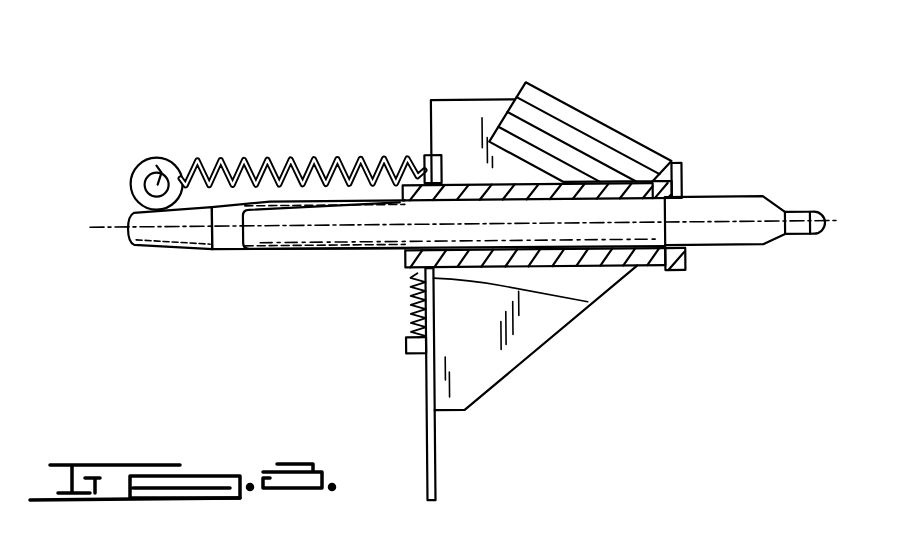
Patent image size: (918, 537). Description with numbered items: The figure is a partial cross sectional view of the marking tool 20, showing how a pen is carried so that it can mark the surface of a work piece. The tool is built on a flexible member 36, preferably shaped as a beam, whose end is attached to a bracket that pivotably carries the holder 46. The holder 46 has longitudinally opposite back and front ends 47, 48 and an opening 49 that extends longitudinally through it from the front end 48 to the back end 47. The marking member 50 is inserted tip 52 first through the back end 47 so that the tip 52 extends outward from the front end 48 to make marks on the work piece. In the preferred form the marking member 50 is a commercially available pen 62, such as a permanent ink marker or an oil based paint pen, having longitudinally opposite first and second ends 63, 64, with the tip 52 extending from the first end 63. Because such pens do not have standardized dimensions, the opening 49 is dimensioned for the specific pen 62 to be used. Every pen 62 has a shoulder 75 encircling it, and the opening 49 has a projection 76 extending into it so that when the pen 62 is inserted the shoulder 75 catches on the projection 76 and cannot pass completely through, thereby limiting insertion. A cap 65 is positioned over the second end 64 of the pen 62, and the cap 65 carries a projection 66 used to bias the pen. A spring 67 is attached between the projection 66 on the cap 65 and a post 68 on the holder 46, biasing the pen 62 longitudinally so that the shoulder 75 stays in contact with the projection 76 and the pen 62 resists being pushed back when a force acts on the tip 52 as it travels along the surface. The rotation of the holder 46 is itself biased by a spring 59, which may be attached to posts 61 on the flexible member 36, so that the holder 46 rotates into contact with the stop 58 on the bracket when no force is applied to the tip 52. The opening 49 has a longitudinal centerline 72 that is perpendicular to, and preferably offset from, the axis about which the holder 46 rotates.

The marking tool 20 is at (270, 100).
The flexible member 36 is at (437, 440).
The holder 46 is at (658, 268).
The back end 47 is at (402, 262).
The front end 48 is at (683, 268).
The opening 49 is at (583, 250).
The marking member 50 is at (706, 198).
The tip 52 is at (820, 238).
The stop 58 is at (590, 130).
The spring 59 is at (408, 320).
The posts 61 is at (405, 348).
The pen 62 is at (466, 225).
The first end 63 is at (792, 214).
The second end 64 is at (228, 252).
The cap 65 is at (130, 218).
The projection 66 is at (140, 158).
The spring 67 is at (223, 156).
The post 68 is at (428, 158).
The longitudinal centerline 72 is at (112, 232).
The shoulder 75 is at (674, 165).
The projection 76 is at (690, 252).